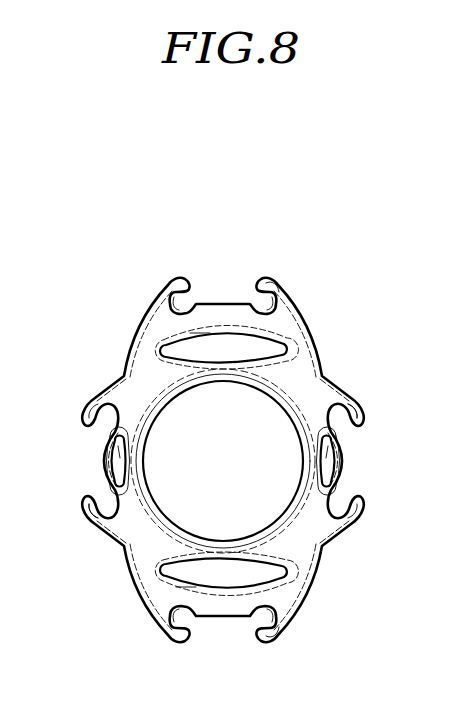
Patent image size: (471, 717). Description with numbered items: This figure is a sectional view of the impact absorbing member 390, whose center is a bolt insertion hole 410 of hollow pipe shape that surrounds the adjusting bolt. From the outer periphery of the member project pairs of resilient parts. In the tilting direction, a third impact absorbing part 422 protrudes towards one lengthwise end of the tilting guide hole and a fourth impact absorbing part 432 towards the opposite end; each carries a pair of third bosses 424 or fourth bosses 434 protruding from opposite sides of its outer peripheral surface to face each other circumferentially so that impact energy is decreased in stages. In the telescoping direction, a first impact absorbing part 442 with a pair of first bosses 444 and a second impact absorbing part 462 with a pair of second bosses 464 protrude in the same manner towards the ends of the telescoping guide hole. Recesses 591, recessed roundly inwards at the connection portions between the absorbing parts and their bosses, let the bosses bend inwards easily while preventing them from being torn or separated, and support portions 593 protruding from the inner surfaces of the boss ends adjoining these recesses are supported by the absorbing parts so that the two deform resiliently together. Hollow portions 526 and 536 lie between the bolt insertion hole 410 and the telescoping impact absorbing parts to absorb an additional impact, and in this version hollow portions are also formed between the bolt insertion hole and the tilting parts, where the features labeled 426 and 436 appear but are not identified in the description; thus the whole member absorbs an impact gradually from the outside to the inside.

The impact absorbing member 390 is at (62, 212).
The bolt insertion hole 410 is at (160, 403).
The third impact absorbing part 422 is at (212, 306).
The third bosses 424 is at (273, 285).
The first protrusion 426 is at (204, 344).
The fourth impact absorbing part 432 is at (214, 612).
The fourth bosses 434 is at (270, 637).
The second protrusion 436 is at (190, 576).
The first impact absorbing part 442 is at (113, 462).
The first bosses 444 is at (86, 512).
The second impact absorbing part 462 is at (333, 460).
The second bosses 464 is at (364, 410).
The hollow portion 526 is at (117, 450).
The hollow portion 536 is at (331, 450).
The recesses 591 is at (305, 328).
The support portions 593 is at (258, 288).